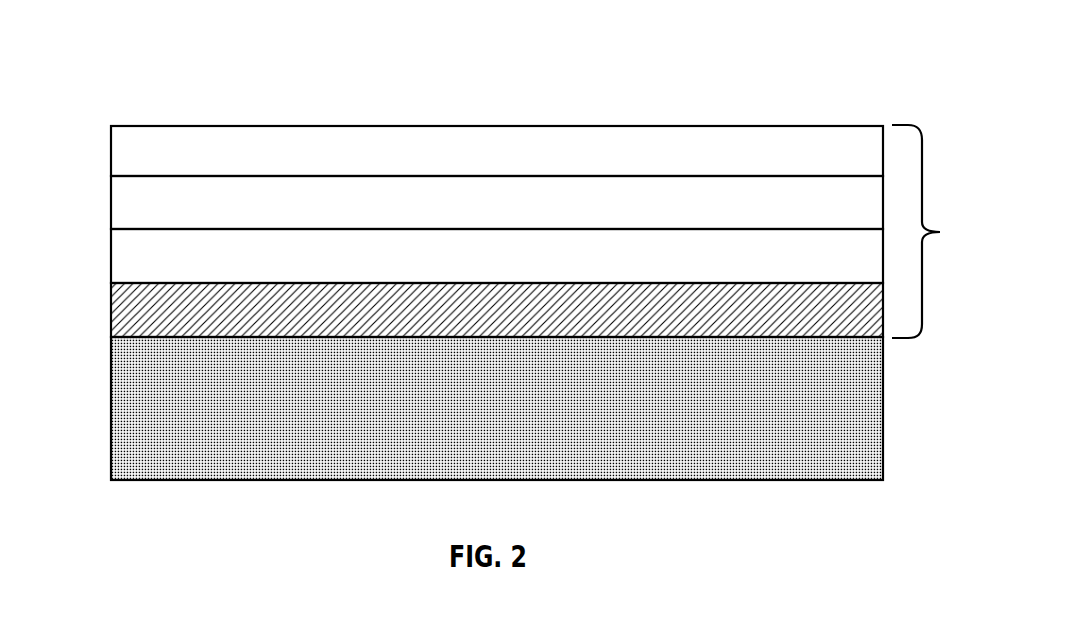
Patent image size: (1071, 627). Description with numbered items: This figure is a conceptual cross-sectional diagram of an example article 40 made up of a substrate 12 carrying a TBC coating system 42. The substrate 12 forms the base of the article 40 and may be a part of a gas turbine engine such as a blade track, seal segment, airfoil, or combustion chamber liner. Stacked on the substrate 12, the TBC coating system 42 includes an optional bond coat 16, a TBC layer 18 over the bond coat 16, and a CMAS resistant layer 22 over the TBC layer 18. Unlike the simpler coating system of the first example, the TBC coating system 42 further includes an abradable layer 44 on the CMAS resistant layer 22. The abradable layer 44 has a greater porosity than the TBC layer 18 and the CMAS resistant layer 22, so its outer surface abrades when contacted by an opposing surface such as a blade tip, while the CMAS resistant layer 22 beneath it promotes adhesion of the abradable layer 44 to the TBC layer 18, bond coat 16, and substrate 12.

The article 40 is at (847, 68).
The TBC coating system 42 is at (933, 231).
The abradable layer 44 is at (111, 150).
The CMAS resistant layer 22 is at (111, 199).
The TBC layer 18 is at (111, 255).
The bond coat 16 is at (111, 311).
The substrate 12 is at (111, 428).